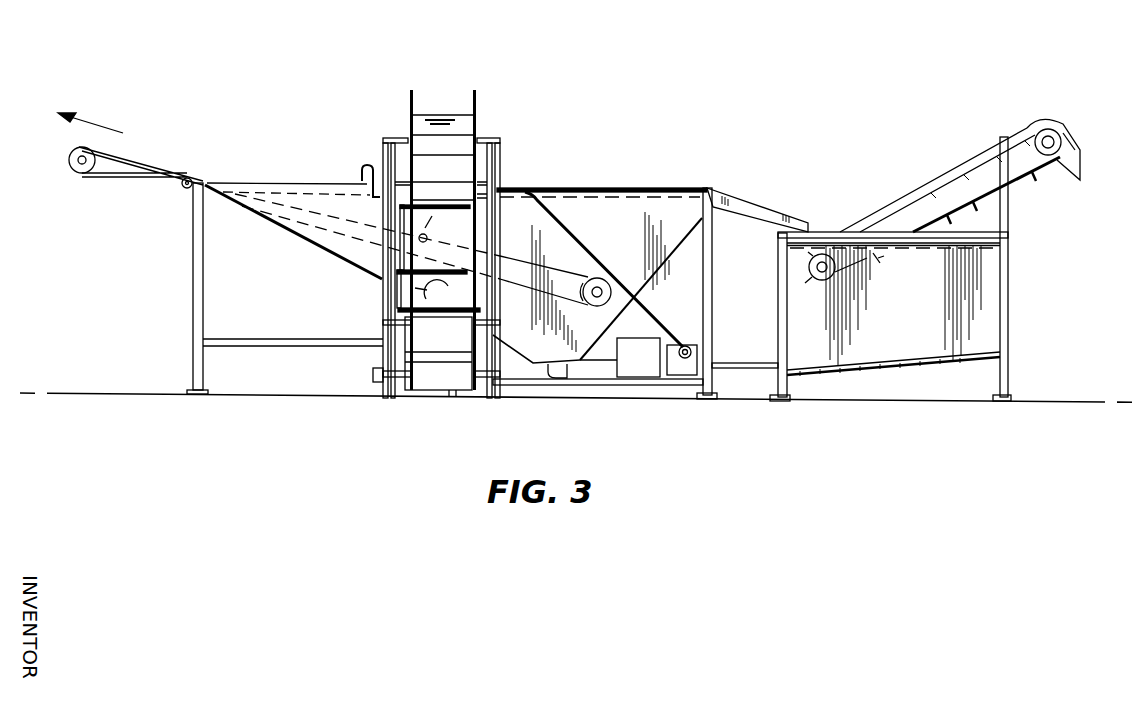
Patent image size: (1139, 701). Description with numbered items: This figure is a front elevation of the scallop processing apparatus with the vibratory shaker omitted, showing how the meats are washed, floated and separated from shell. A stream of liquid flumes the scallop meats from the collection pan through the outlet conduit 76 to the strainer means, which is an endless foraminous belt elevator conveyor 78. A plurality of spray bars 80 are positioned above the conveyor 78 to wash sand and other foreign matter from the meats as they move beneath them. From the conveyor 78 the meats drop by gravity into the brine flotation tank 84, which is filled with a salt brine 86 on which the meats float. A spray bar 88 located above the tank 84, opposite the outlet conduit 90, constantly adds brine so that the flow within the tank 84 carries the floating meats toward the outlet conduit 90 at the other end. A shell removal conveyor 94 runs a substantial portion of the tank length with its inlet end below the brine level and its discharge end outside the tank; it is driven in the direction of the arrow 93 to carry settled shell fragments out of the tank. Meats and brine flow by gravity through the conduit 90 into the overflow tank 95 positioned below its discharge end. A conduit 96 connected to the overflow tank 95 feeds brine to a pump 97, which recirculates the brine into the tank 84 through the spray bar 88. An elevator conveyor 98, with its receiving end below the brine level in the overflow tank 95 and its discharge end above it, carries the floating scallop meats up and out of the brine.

The outlet conduit 76 is at (400, 290).
The endless foraminous belt elevator conveyor 78 is at (477, 113).
The spray bars 80 is at (440, 270).
The brine flotation tank 84 is at (578, 173).
The salt brine 86 is at (634, 196).
The spray bar 88 is at (362, 182).
The outlet conduit 90 is at (727, 190).
The arrow 93 is at (101, 122).
The shell removal conveyor 94 is at (167, 160).
The overflow tank 95 is at (1008, 337).
The conduit 96 is at (755, 370).
The pump 97 is at (687, 367).
The elevator conveyor 98 is at (940, 170).